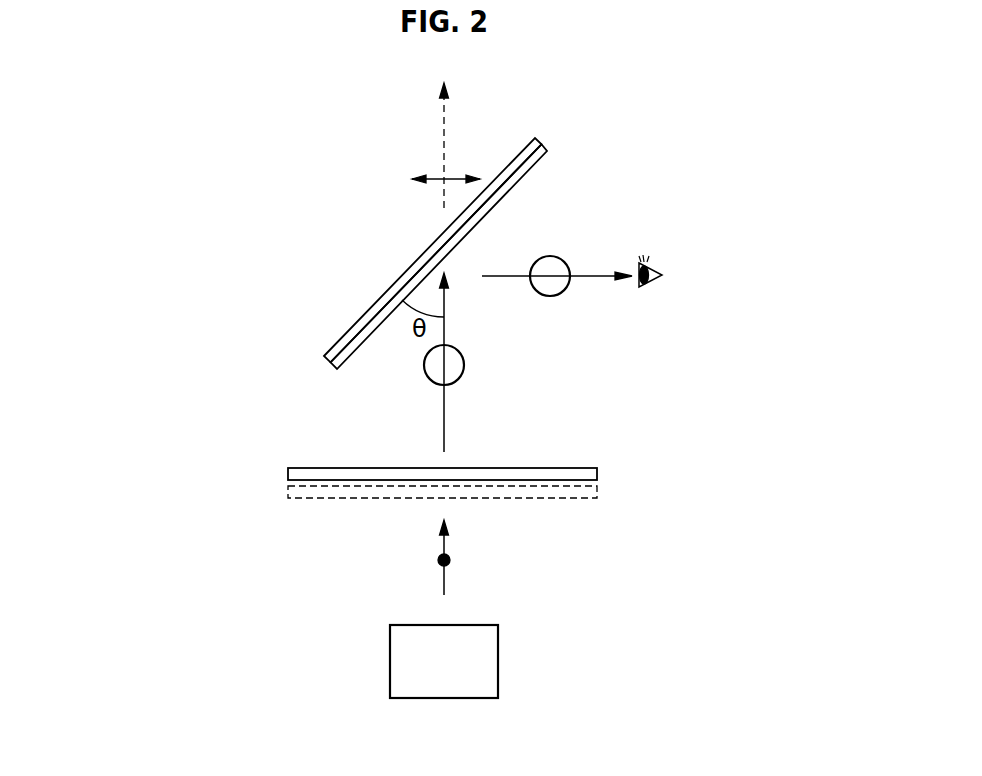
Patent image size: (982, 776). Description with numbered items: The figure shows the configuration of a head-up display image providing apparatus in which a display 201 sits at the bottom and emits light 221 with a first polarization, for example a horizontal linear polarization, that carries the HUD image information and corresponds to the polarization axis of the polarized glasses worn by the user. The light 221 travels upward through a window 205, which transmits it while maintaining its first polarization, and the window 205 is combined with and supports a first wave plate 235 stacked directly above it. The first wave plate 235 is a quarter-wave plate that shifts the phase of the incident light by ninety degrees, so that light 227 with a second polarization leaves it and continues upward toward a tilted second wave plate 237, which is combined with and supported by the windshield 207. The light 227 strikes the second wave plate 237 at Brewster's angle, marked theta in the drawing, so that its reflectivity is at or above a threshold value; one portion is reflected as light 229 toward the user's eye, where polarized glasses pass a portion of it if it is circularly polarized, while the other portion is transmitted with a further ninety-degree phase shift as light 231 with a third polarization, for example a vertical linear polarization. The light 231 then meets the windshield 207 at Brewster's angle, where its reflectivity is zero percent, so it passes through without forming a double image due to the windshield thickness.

The display 201 is at (498, 660).
The window 205 is at (298, 498).
The windshield 207 is at (363, 315).
The light with first polarization 221 is at (446, 578).
The light with second polarization 227 is at (444, 418).
The reflected light 229 is at (590, 278).
The light with third polarization 231 is at (443, 130).
The first wave plate 235 is at (298, 468).
The second wave plate 237 is at (532, 168).